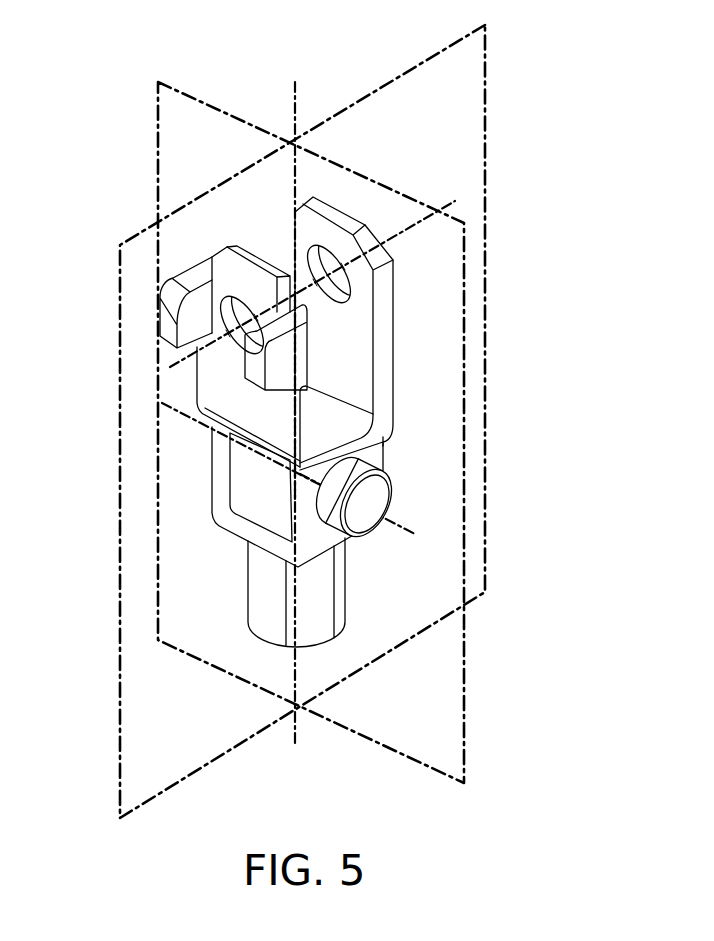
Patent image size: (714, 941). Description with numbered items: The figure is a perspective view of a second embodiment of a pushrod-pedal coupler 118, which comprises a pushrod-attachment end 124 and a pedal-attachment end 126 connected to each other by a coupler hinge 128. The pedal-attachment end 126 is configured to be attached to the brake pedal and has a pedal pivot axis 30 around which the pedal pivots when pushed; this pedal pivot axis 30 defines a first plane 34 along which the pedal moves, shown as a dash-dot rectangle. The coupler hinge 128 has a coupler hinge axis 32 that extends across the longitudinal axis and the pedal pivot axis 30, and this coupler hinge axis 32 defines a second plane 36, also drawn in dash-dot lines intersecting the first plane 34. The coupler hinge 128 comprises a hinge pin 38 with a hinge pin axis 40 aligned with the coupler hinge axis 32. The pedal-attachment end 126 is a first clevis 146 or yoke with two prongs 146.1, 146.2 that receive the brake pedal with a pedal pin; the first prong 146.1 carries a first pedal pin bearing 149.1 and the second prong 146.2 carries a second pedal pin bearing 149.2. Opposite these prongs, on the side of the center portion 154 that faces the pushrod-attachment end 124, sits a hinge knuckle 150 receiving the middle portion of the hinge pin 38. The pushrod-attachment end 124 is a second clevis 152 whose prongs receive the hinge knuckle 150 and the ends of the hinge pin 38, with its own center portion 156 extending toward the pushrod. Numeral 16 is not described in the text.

The first axis 16 is at (295, 82).
The pedal pivot axis 30 is at (432, 218).
The coupler hinge axis 32 is at (394, 528).
The first plane 34 is at (158, 102).
The second plane 36 is at (447, 48).
The hinge pin 38 is at (352, 526).
The hinge pin axis 40 is at (330, 489).
The pushrod-pedal coupler 118 is at (262, 97).
The pushrod-attachment end 124 is at (435, 526).
The pedal-attachment end 126 is at (409, 206).
The coupler hinge 128 is at (402, 457).
The first clevis 146 is at (254, 300).
The first prong 146.1 is at (171, 287).
The second prong 146.2 is at (375, 300).
The first pedal pin bearing 149.1 is at (222, 322).
The second pedal pin bearing 149.2 is at (351, 284).
The hinge knuckle 150 is at (241, 500).
The second clevis 152 is at (253, 497).
The center portion 154 is at (348, 400).
The center portion 156 is at (263, 545).